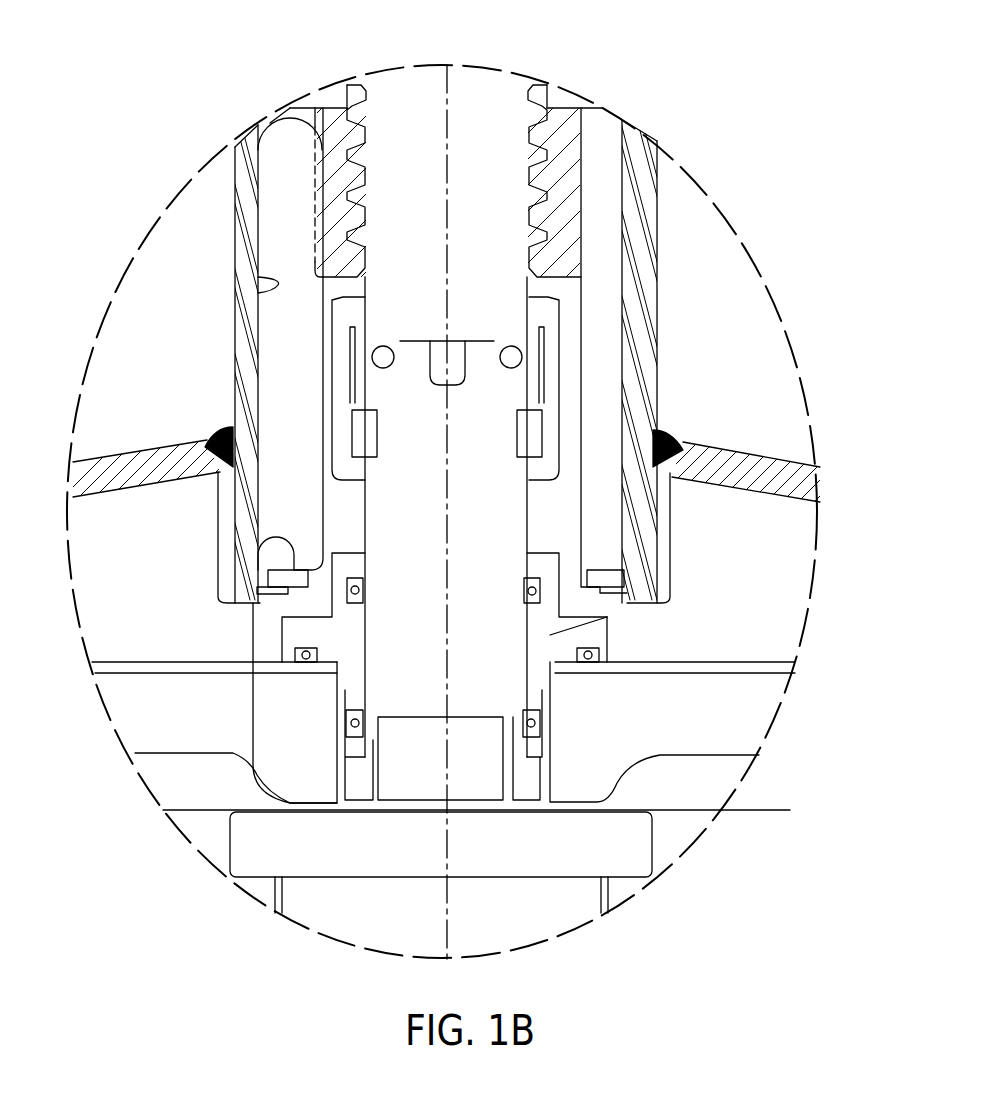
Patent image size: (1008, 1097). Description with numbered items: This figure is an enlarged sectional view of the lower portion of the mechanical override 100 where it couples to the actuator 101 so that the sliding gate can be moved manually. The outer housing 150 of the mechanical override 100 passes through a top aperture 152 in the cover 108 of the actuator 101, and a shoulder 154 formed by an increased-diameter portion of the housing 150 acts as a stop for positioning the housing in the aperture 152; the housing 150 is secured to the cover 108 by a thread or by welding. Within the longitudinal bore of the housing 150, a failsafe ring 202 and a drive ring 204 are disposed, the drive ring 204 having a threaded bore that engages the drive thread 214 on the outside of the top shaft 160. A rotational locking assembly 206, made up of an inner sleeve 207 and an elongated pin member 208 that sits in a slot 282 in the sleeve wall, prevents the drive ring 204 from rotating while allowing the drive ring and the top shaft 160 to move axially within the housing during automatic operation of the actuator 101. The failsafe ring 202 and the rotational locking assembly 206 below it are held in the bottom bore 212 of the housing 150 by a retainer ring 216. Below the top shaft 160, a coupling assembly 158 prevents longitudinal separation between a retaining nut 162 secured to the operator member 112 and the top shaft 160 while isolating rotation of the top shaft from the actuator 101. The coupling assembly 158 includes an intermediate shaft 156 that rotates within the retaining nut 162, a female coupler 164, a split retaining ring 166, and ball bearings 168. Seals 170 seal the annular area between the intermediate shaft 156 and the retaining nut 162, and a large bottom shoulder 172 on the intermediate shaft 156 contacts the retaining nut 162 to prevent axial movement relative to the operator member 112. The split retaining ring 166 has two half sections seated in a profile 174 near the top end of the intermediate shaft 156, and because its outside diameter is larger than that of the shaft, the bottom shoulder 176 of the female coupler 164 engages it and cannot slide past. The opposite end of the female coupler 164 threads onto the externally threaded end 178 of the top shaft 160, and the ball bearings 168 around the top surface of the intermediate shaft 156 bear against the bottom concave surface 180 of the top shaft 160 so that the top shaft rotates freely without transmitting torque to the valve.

The mechanical override 100 is at (856, 172).
The actuator 101 is at (842, 572).
The cover 108 is at (783, 462).
The operator member 112 is at (757, 697).
The outer housing 150 is at (245, 235).
The top aperture 152 is at (651, 425).
The shoulder 154 is at (205, 438).
The intermediate shaft 156 is at (393, 662).
The coupling assembly 158 is at (277, 593).
The top shaft 160 is at (400, 95).
The retaining nut 162 is at (607, 617).
The female coupler 164 is at (550, 380).
The split retaining ring 166 is at (360, 434).
The ball bearings 168 is at (512, 357).
The seals 170 is at (595, 575).
The bottom shoulder 172 is at (525, 789).
The profile 174 is at (352, 413).
The bottom shoulder 176 is at (335, 445).
The externally threaded end 178 is at (318, 362).
The bottom concave surface 180 is at (441, 382).
The failsafe ring 202 is at (563, 100).
The drive ring 204 is at (245, 147).
The rotational locking assembly 206 is at (235, 302).
The inner sleeve 207 is at (300, 112).
The pin member 208 is at (290, 196).
The bottom bore 212 is at (258, 277).
The drive thread 214 is at (557, 200).
The retainer ring 216 is at (265, 612).
The slot 282 is at (258, 536).